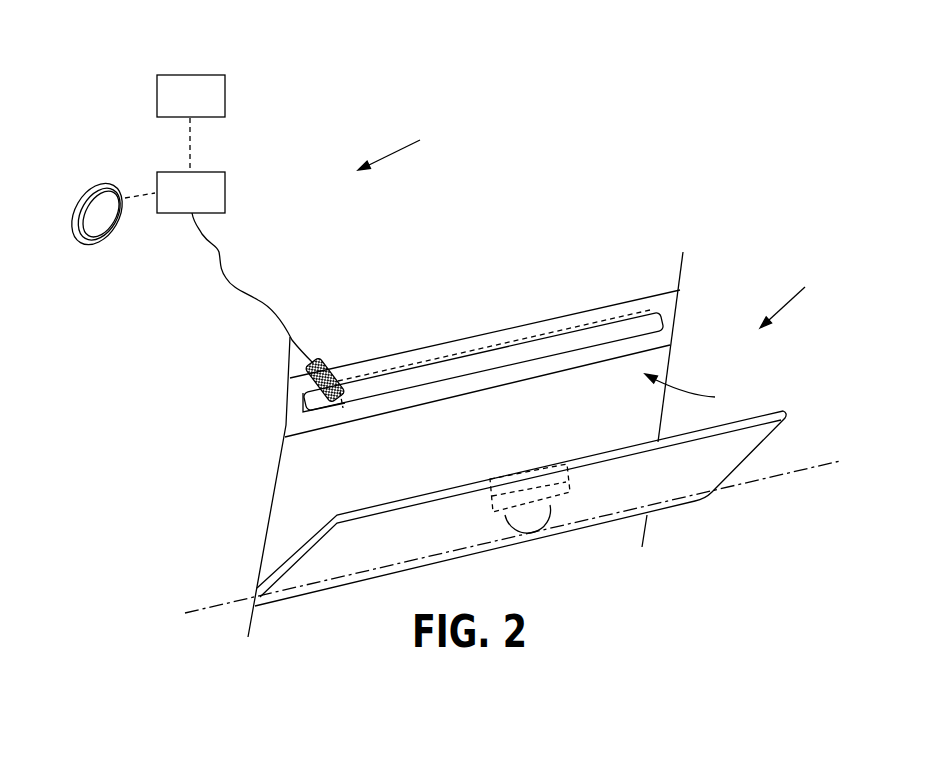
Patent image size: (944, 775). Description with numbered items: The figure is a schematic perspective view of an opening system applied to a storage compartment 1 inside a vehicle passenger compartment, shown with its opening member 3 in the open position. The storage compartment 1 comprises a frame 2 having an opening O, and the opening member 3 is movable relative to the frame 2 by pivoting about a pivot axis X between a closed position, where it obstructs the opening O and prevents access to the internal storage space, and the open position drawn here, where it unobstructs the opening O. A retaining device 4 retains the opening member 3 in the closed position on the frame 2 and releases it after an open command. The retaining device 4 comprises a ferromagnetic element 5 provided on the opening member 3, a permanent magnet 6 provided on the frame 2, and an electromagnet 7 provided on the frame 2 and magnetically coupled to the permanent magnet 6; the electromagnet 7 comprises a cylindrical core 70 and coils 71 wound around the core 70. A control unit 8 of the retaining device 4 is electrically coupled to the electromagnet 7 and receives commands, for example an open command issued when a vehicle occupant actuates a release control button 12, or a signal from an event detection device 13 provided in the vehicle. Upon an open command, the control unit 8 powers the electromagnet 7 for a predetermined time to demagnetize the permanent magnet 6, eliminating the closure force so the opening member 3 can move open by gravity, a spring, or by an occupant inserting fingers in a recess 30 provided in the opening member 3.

The storage compartment 1 is at (791, 295).
The frame 2 is at (670, 311).
The opening member 3 is at (712, 463).
The retaining device 4 is at (397, 145).
The ferromagnetic element 5 is at (570, 523).
The permanent magnet 6 is at (644, 318).
The electromagnet 7 is at (364, 340).
The control unit 8 is at (227, 185).
The release control button 12 is at (90, 183).
The event detection device 13 is at (227, 88).
The recess 30 is at (533, 527).
The cylindrical core 70 is at (313, 360).
The coils 71 is at (341, 393).
The opening O is at (691, 393).
The pivot axis X is at (203, 602).